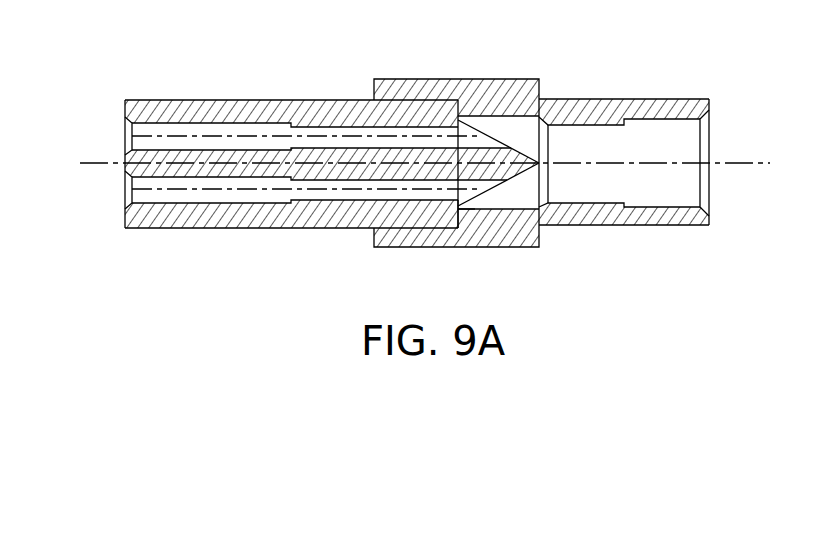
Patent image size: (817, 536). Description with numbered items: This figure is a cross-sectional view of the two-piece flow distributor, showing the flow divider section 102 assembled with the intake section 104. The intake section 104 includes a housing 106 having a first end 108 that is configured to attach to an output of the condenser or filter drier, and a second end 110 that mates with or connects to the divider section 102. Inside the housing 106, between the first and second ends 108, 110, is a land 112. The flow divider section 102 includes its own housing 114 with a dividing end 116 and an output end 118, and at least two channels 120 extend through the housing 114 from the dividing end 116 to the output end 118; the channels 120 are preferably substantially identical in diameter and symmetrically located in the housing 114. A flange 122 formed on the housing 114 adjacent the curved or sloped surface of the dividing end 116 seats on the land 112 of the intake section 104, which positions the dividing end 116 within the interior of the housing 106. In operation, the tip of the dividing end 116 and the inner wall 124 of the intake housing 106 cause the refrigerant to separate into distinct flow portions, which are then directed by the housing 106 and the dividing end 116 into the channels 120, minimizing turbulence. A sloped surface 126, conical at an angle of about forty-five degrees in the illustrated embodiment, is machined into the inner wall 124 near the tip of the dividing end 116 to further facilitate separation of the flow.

The flow divider section 102 is at (235, 98).
The intake section 104 is at (652, 60).
The housing 106 is at (582, 106).
The first end 108 is at (695, 102).
The second end 110 is at (418, 79).
The land 112 is at (458, 214).
The housing 114 is at (195, 104).
The dividing end 116 is at (528, 180).
The output end 118 is at (125, 110).
The channels 120 is at (318, 122).
The flange 122 is at (457, 214).
The inner wall 124 is at (516, 116).
The sloped surface 126 is at (548, 203).